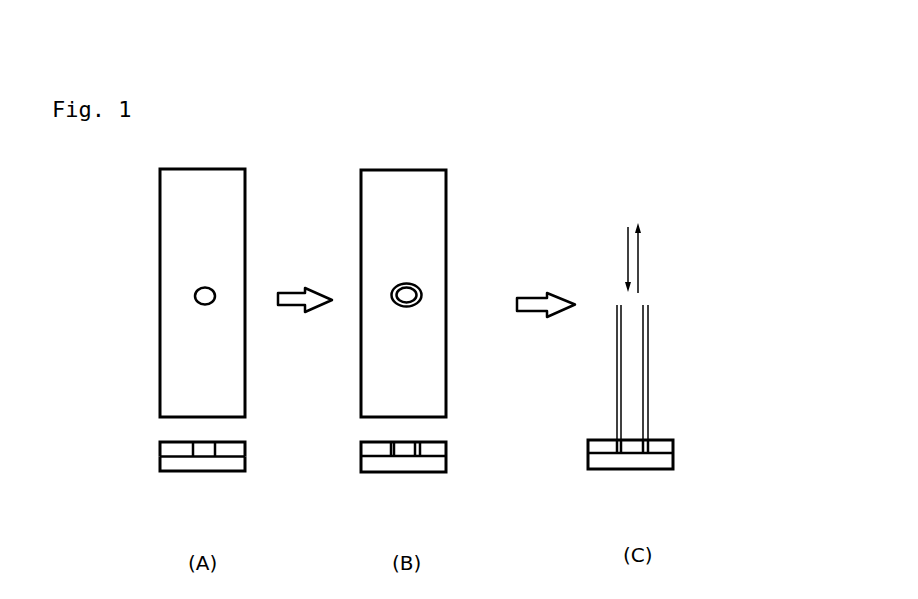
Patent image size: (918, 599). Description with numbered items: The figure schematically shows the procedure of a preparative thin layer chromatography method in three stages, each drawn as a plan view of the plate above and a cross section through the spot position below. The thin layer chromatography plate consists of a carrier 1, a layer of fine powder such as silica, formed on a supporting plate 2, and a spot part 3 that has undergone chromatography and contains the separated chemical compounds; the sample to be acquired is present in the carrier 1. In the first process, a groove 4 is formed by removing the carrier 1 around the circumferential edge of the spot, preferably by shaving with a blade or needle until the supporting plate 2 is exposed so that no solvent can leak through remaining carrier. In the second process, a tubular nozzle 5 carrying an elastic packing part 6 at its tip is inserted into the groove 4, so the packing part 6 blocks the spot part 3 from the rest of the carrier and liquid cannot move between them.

The carrier 1 is at (172, 448).
The supporting plate 2 is at (177, 463).
The spot part 3 is at (190, 443).
The groove 4 is at (420, 300).
The nozzle 5 is at (632, 395).
The packing part 6 is at (667, 440).